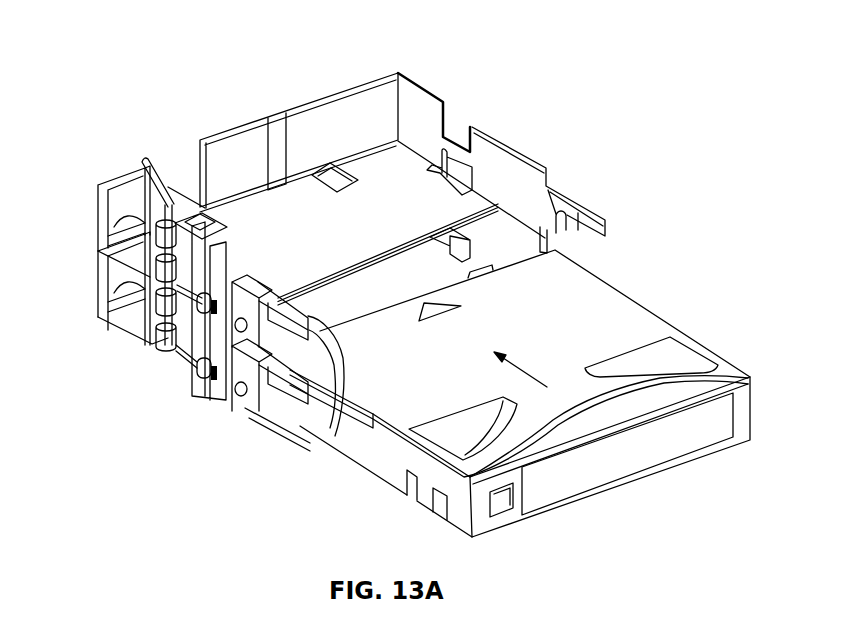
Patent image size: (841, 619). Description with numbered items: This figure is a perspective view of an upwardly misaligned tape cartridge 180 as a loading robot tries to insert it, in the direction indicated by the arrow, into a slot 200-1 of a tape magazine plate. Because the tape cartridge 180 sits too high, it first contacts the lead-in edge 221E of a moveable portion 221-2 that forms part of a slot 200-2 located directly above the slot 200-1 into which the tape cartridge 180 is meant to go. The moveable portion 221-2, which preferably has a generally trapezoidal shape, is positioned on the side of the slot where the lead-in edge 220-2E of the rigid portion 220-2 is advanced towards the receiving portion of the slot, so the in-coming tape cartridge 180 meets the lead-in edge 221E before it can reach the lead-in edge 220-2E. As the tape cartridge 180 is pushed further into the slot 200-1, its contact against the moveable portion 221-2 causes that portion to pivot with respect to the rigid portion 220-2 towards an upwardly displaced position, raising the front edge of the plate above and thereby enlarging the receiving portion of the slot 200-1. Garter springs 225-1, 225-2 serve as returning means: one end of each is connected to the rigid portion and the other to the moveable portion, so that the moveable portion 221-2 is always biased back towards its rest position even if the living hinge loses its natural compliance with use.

The tape cartridge 180 is at (600, 477).
The rigid portion 220-2 is at (297, 215).
The lead-in edge of the rigid portion 220-2E is at (350, 272).
The slot 200-2 is at (183, 291).
The slot 200-1 is at (190, 318).
The garter spring 225-2 is at (218, 323).
The garter spring 225-1 is at (217, 392).
The moveable portion 221-2 is at (286, 340).
The lead-in edge of the moveable portion 221E is at (333, 368).